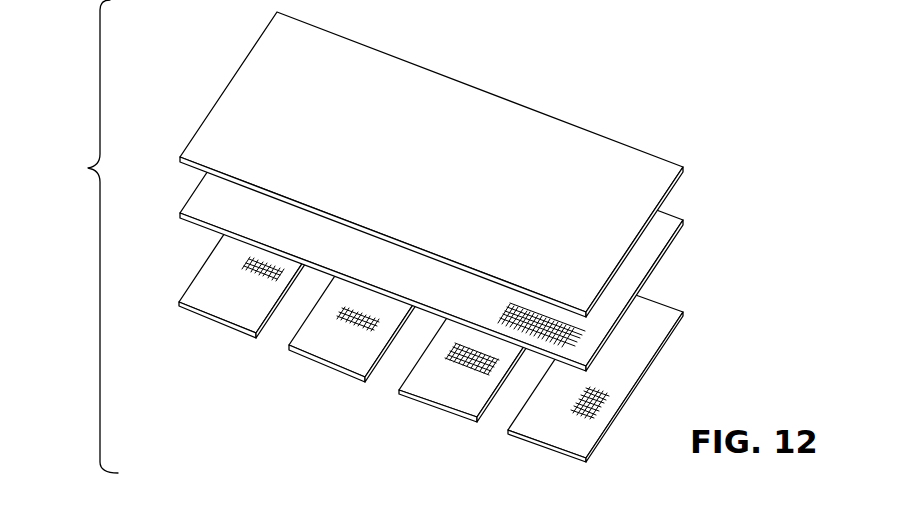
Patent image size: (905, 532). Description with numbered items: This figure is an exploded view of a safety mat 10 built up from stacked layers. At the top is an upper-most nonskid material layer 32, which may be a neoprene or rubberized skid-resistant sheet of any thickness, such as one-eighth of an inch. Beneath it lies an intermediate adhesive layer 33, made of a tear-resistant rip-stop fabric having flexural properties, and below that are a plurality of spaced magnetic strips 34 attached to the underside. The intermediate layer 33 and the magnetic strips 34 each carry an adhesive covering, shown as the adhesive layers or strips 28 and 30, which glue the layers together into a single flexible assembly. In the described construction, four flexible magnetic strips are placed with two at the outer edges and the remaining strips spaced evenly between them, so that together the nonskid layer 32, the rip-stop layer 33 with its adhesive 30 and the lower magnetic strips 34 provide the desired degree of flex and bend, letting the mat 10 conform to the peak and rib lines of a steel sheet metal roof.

The skid-resistant mat 10 is at (86, 168).
The adhesive covering 28 is at (283, 275).
The adhesive layer 30 is at (580, 346).
The upper-most nonskid material layer 32 is at (250, 93).
The intermediate adhesive layer 33 is at (207, 207).
The magnetic strips 34 is at (217, 323).